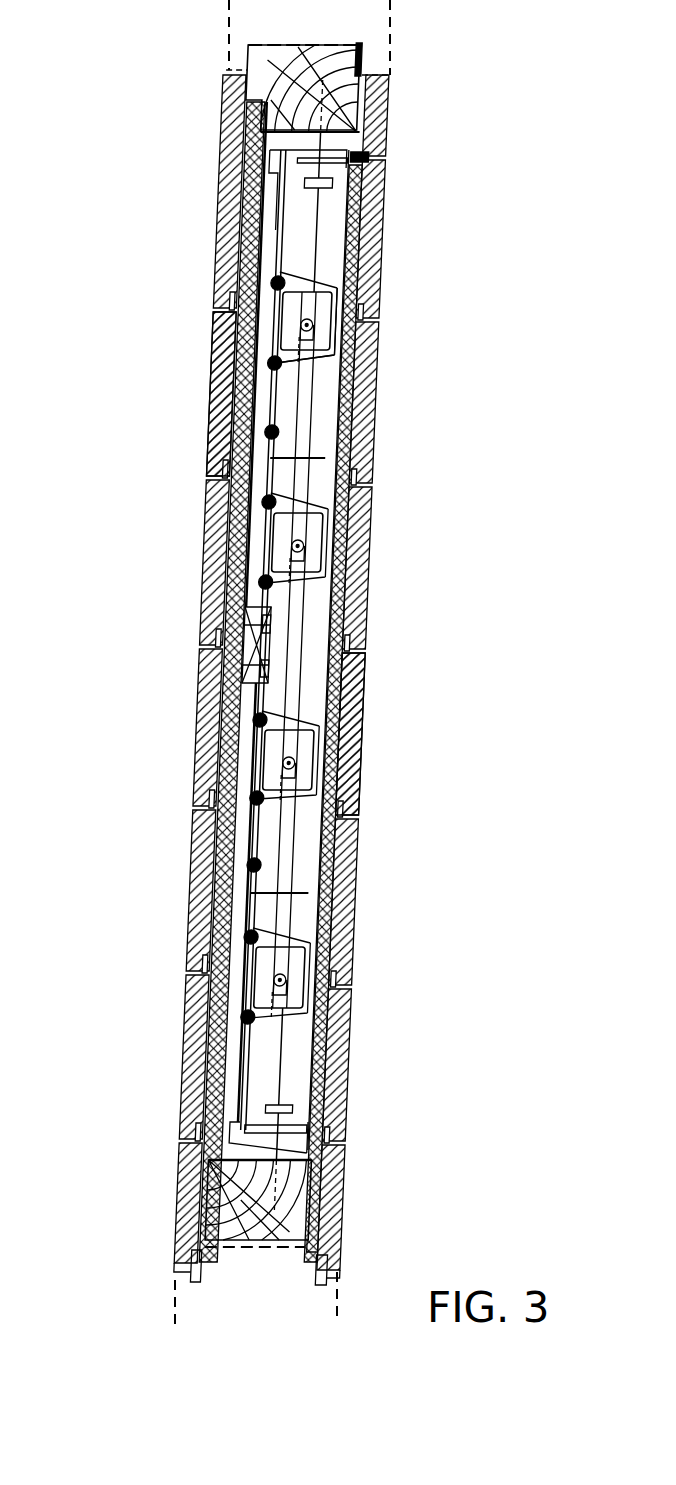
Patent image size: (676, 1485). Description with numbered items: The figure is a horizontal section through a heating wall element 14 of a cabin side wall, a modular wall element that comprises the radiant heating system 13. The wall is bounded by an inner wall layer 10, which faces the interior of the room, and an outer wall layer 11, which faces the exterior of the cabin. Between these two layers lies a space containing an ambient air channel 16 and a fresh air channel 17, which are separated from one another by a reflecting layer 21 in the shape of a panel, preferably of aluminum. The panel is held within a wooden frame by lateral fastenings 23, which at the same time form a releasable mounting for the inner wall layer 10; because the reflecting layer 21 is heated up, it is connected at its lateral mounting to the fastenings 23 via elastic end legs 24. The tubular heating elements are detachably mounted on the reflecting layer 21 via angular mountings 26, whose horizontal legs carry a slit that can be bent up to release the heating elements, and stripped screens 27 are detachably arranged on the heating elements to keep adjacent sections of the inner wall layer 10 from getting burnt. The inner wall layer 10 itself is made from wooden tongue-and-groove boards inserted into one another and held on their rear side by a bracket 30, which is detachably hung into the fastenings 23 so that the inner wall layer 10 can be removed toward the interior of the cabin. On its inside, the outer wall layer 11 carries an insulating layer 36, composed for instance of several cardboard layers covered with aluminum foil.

The inner wall layer 10 is at (398, 263).
The outer wall layer 11 is at (205, 241).
The radiant heating system 13 is at (290, 853).
The heating wall element 14 is at (381, 718).
The ambient air channel 16 is at (303, 618).
The fresh air channel 17 is at (257, 563).
The reflecting layer 21 is at (345, 221).
The lateral fastenings 23 is at (340, 1162).
The elastic end legs 24 is at (187, 1160).
The angular mountings 26 is at (352, 365).
The stripped screens 27 is at (350, 565).
The bracket 30 is at (378, 189).
The insulating layer 36 is at (215, 375).